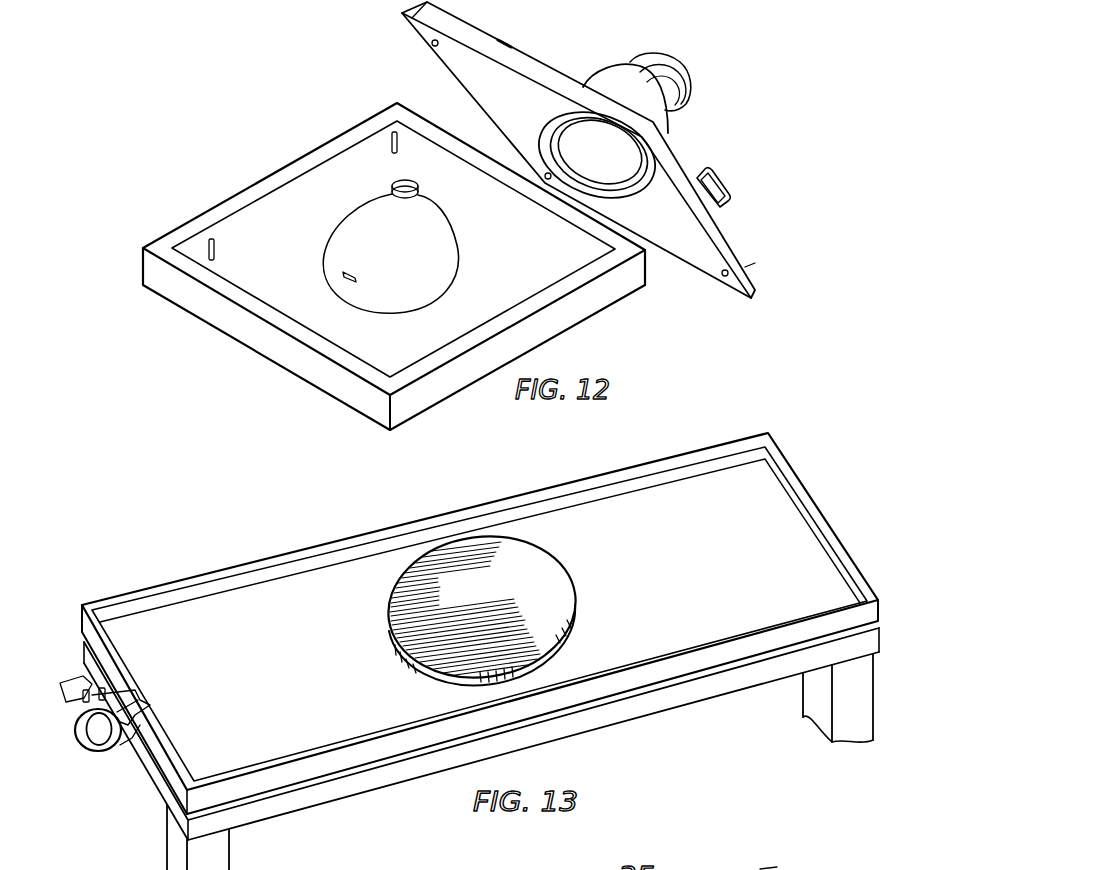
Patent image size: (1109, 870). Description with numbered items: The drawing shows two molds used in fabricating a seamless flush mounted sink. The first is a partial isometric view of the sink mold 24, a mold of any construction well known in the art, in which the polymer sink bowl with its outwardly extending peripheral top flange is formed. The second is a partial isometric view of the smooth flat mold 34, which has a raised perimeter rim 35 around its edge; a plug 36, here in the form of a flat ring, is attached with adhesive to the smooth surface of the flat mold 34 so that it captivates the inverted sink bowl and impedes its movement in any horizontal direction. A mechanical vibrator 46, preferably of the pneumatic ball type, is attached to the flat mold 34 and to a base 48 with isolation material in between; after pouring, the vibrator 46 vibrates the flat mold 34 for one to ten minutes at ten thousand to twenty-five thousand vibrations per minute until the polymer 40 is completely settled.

In FIG. 12, the sink mold 24 is at (293, 378).
In FIG. 13, the smooth flat mold 34 is at (757, 498).
In FIG. 13, the raised perimeter rim 35 is at (312, 546).
In FIG. 13, the plug 36 is at (543, 658).
In FIG. 13, the polymer 40 is at (806, 869).
In FIG. 13, the mechanical vibrator 46 is at (112, 757).
In FIG. 13, the base 48 is at (341, 800).